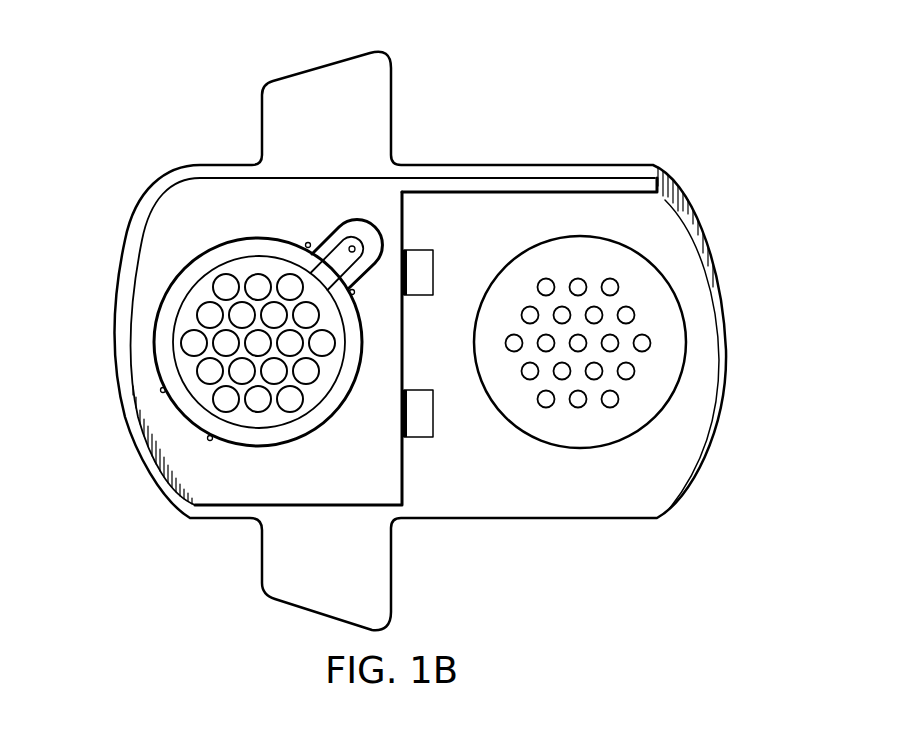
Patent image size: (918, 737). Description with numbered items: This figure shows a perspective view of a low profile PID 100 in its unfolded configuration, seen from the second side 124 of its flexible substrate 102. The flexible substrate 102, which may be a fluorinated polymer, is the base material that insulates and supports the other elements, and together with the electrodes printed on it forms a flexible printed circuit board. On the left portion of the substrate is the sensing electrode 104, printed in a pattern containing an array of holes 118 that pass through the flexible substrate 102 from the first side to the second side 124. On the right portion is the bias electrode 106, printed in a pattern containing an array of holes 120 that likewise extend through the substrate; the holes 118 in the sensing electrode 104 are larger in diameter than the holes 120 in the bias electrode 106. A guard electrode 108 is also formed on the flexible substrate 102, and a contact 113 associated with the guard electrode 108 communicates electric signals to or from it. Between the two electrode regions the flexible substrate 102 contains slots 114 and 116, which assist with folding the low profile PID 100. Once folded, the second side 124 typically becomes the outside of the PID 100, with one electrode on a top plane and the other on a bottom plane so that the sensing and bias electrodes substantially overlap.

The low profile PID 100 is at (577, 70).
The flexible substrate 102 is at (609, 142).
The sensing electrode 104 is at (160, 352).
The bias electrode 106 is at (625, 247).
The guard electrode 108 is at (140, 372).
The contact 113 is at (483, 177).
The slot 114 is at (428, 420).
The slot 116 is at (418, 259).
The holes 118 is at (262, 282).
The holes 120 is at (577, 402).
The second side 124 is at (705, 410).